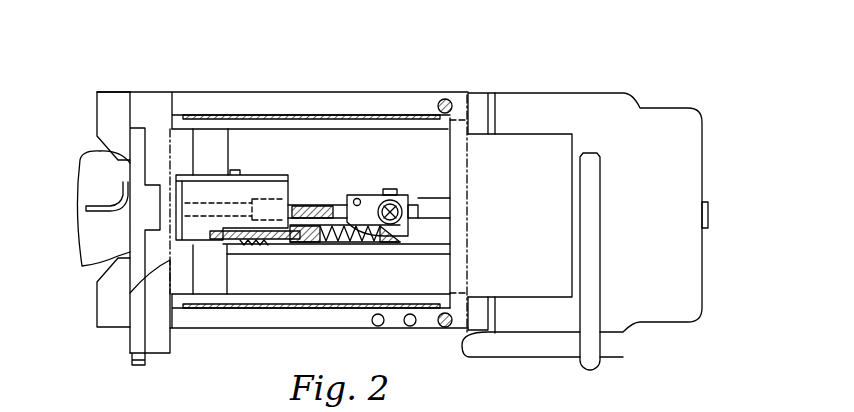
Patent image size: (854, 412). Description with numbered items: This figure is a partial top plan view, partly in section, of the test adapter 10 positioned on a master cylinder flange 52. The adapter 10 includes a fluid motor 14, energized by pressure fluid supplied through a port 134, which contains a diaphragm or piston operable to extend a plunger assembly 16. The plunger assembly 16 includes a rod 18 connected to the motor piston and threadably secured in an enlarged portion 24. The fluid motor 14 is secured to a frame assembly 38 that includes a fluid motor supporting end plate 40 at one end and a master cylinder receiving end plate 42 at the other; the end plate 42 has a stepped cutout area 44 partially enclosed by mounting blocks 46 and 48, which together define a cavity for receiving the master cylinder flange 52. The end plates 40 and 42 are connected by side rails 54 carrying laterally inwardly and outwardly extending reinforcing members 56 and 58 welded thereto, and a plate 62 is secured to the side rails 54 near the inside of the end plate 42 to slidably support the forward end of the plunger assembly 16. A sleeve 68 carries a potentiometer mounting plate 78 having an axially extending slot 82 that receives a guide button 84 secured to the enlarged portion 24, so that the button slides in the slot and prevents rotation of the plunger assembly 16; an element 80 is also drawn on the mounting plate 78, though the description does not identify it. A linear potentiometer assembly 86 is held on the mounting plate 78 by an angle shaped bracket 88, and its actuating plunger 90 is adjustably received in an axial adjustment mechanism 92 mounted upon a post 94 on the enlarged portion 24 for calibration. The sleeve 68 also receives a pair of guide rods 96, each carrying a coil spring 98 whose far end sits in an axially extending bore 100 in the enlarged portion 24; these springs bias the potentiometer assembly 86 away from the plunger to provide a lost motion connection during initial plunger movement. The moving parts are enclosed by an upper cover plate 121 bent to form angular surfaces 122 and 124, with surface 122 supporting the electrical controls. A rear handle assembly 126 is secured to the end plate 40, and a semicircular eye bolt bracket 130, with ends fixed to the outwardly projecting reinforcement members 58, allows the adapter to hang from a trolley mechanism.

The test adapter 10 is at (86, 137).
The fluid motor 14 is at (670, 130).
The plunger assembly 16 is at (398, 256).
The rod 18 is at (440, 218).
The enlarged portion 24 is at (405, 240).
The frame assembly 38 is at (353, 90).
The fluid motor supporting end plate 40 is at (480, 100).
The master cylinder receiving end plate 42 is at (157, 318).
The stepped cutout area 44 is at (138, 268).
The mounting block 46 is at (115, 105).
The mounting block 48 is at (105, 313).
The master cylinder flange 52 is at (140, 143).
The side rails 54 is at (273, 123).
The laterally inwardly extending reinforcing member 56 is at (325, 138).
The laterally outwardly extending reinforcing member 58 is at (410, 102).
The plate 62 is at (212, 145).
The sleeve 68 is at (207, 250).
The potentiometer mounting plate 78 is at (352, 194).
The roller 80 is at (400, 203).
The axially extending slot 82 is at (318, 203).
The guide button 84 is at (305, 204).
The linear potentiometer assembly 86 is at (245, 202).
The angle shaped bracket 88 is at (270, 182).
The actuating plunger 90 is at (347, 244).
The axial adjustment mechanism 92 is at (410, 199).
The post 94 is at (385, 193).
The guide rod 96 is at (265, 238).
The coil spring 98 is at (362, 245).
The axially extending bore 100 is at (322, 245).
The upper cover plate 121 is at (557, 145).
The angular surface 122 is at (297, 307).
The angular surface 124 is at (207, 113).
The rear handle assembly 126 is at (593, 271).
The eye bolt bracket 130 is at (447, 97).
The port 134 is at (707, 224).